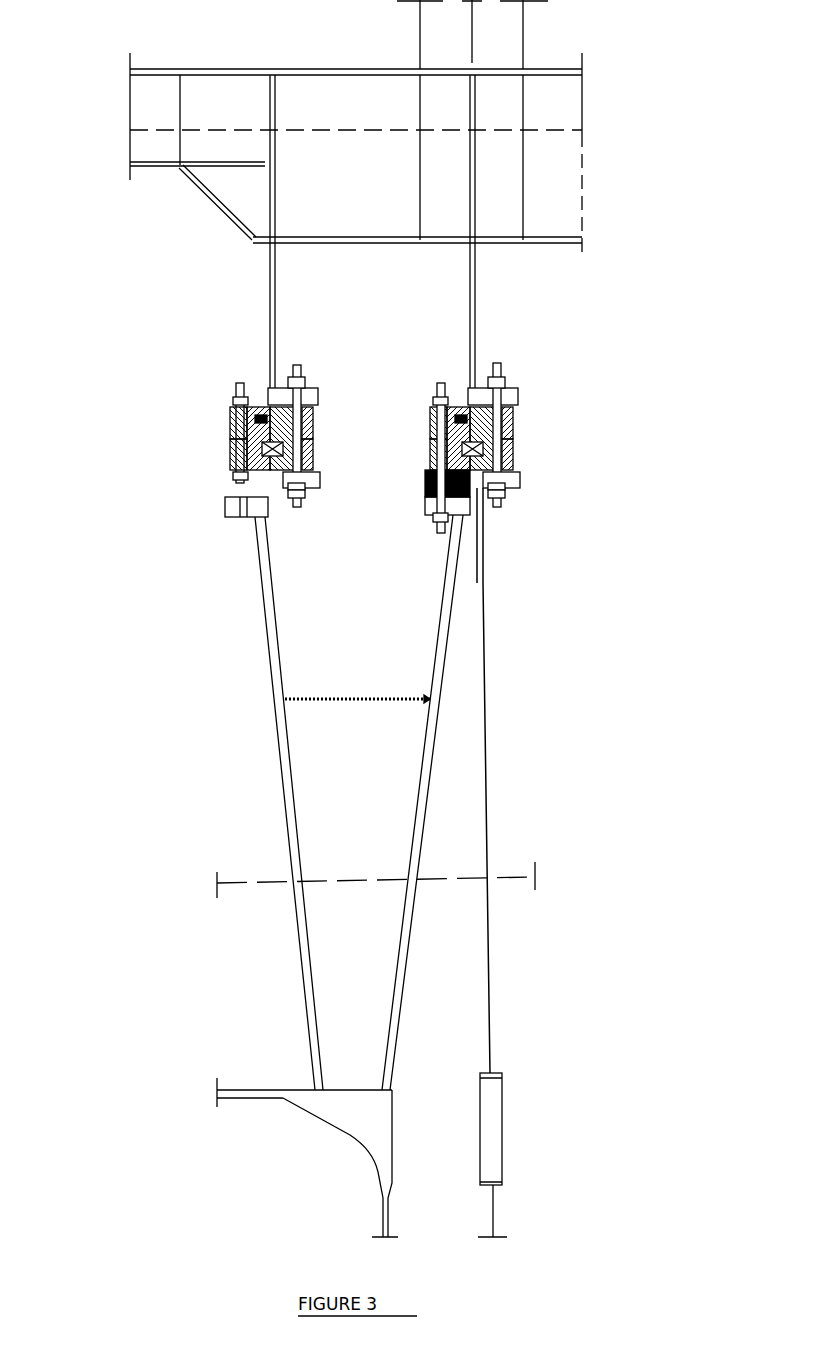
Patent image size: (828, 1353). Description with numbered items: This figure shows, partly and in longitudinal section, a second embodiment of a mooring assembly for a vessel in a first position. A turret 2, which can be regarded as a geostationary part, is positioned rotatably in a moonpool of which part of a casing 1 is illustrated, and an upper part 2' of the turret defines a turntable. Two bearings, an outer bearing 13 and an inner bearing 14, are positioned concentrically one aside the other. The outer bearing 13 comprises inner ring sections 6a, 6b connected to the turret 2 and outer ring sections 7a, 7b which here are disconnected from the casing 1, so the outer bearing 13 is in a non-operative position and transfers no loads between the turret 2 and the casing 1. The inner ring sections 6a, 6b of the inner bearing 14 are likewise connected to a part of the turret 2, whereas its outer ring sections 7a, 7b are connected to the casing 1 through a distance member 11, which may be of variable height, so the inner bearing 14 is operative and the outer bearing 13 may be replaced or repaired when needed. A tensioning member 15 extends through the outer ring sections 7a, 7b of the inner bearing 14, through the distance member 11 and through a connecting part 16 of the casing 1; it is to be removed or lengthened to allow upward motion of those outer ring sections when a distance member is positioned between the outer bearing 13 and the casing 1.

The casing 1 is at (435, 635).
The turret 2 is at (533, 862).
The upper part 2' is at (356, 194).
The inner ring section 6a is at (313, 422).
The inner ring section 6b is at (313, 453).
The outer ring section 7a is at (230, 414).
The outer ring section 7b is at (230, 450).
The distance member 11 is at (430, 490).
The outer bearing 13 is at (222, 395).
The inner bearing 14 is at (538, 393).
The tensioning member 15 is at (440, 437).
The connecting part 16 is at (432, 503).